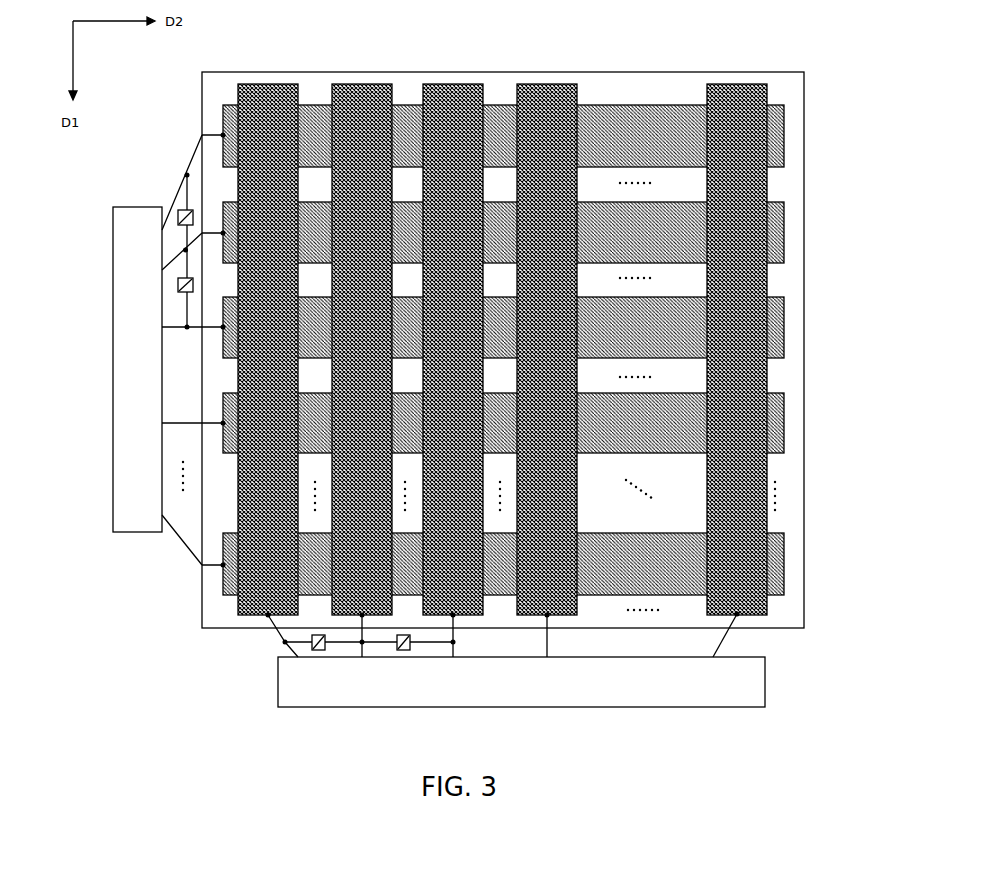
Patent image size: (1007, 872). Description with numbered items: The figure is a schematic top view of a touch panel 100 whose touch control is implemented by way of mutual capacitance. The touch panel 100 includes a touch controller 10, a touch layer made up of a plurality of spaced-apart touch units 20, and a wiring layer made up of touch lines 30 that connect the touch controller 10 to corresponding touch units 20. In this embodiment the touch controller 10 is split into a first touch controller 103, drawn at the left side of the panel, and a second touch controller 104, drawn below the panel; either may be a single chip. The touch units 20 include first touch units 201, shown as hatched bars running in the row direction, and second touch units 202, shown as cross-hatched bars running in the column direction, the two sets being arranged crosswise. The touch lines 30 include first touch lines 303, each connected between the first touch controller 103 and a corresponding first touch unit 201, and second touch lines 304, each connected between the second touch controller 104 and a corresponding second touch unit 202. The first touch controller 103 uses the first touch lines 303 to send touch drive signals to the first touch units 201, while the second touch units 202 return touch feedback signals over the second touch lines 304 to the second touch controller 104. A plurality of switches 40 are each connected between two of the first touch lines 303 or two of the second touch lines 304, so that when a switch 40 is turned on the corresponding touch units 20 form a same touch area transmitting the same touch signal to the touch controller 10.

The touch panel 100 is at (490, 15).
The touch controller 10 is at (439, 457).
The first touch controller 103 is at (131, 513).
The second touch controller 104 is at (295, 678).
The touch unit 20 is at (552, 328).
The first touch unit 201 is at (826, 566).
The second touch unit 202 is at (739, 88).
The touch line 30 is at (521, 349).
The first touch line 303 is at (210, 135).
The second touch line 304 is at (740, 616).
The switch 40 is at (180, 281).